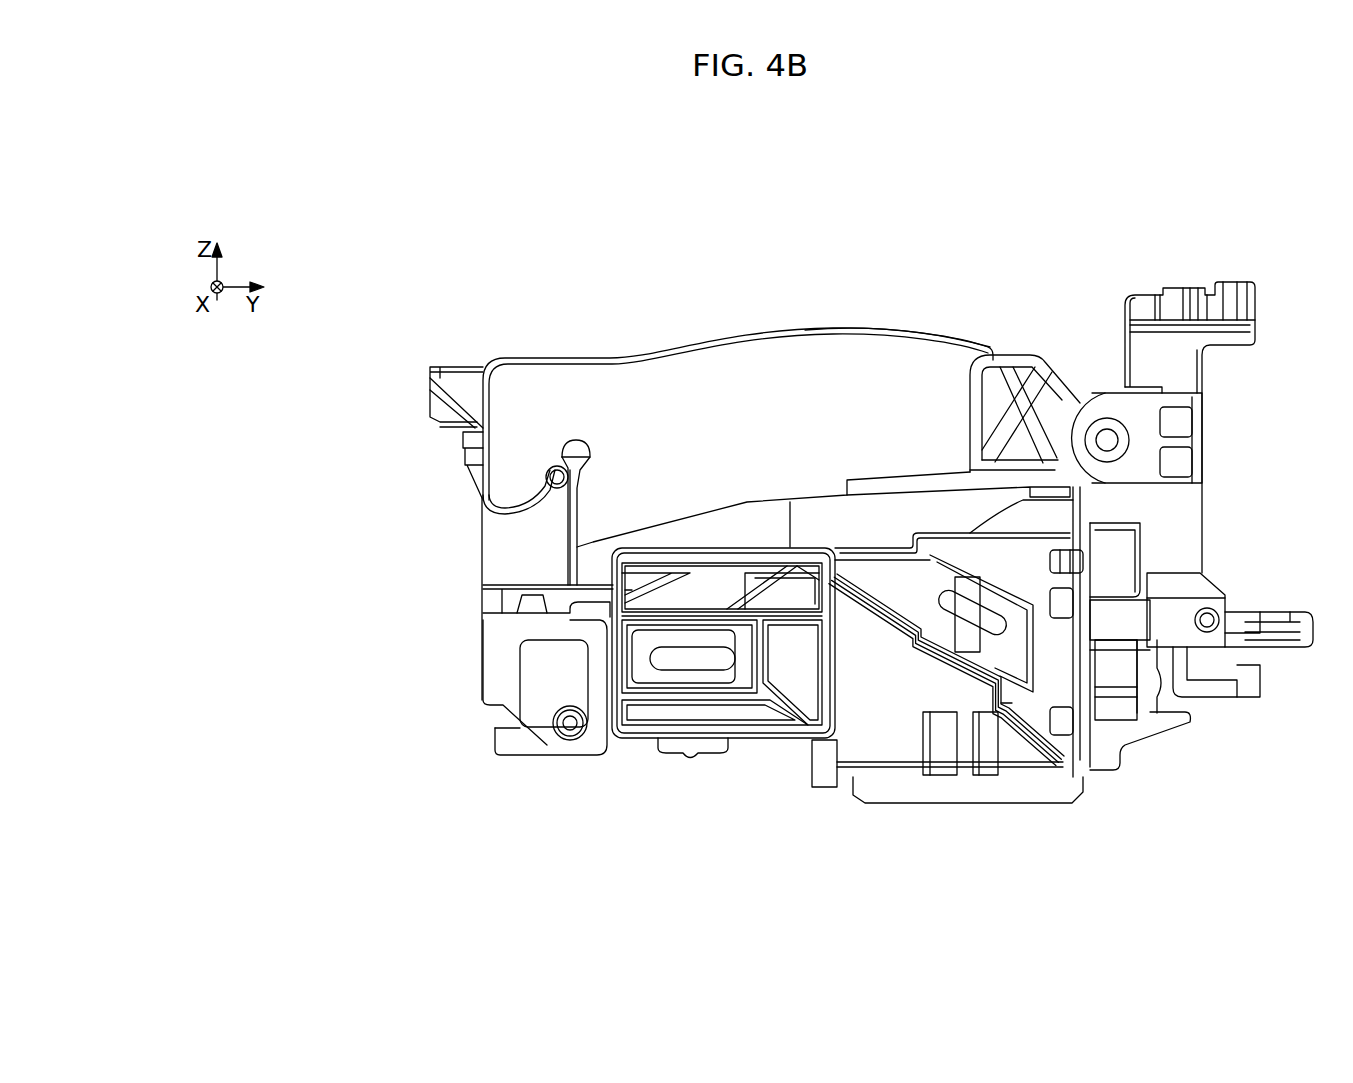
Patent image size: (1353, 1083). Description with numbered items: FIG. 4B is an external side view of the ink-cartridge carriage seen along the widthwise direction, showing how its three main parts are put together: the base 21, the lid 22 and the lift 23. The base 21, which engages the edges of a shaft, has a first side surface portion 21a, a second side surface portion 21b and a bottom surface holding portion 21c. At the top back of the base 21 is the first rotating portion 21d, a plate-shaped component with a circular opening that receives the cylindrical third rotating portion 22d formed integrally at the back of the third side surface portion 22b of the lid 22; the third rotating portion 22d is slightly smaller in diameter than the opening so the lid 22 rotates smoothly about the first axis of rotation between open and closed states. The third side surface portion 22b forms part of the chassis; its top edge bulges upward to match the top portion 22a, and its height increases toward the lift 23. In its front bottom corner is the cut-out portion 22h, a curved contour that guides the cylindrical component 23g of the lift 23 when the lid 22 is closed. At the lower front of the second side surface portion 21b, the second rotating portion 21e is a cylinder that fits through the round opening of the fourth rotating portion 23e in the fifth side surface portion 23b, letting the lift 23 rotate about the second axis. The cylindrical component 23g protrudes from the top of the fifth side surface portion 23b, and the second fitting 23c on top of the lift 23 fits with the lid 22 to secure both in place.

The base 21 is at (1207, 838).
The first side surface portion 21a is at (1110, 673).
The second side surface portion 21b is at (795, 680).
The bottom surface holding portion 21c is at (712, 748).
The first rotating portion 21d is at (1115, 462).
The second rotating portion 21e is at (568, 738).
The lid 22 is at (1097, 240).
The top portion 22a is at (805, 332).
The third side surface portion 22b is at (858, 372).
The third rotating portion 22d is at (1103, 428).
The cut-out portion 22h is at (548, 497).
The lift 23 is at (325, 410).
The fifth side surface portion 23b is at (520, 550).
The second fitting 23c is at (462, 427).
The fourth rotating portion 23e is at (510, 721).
The cylindrical component 23g is at (556, 466).